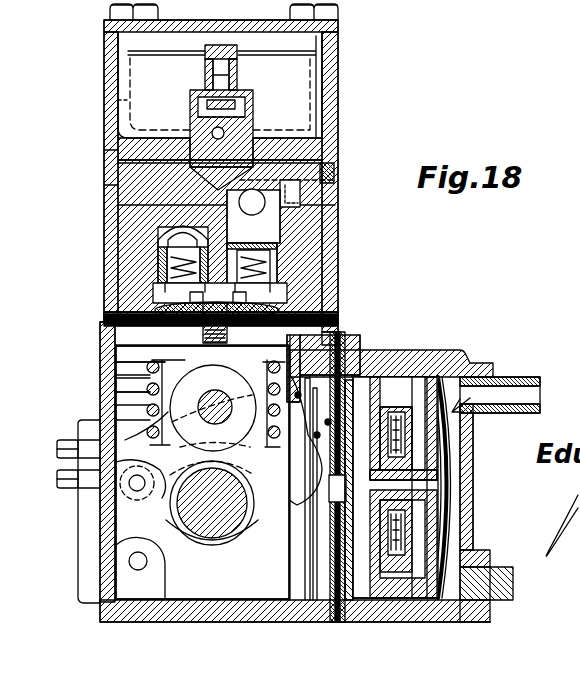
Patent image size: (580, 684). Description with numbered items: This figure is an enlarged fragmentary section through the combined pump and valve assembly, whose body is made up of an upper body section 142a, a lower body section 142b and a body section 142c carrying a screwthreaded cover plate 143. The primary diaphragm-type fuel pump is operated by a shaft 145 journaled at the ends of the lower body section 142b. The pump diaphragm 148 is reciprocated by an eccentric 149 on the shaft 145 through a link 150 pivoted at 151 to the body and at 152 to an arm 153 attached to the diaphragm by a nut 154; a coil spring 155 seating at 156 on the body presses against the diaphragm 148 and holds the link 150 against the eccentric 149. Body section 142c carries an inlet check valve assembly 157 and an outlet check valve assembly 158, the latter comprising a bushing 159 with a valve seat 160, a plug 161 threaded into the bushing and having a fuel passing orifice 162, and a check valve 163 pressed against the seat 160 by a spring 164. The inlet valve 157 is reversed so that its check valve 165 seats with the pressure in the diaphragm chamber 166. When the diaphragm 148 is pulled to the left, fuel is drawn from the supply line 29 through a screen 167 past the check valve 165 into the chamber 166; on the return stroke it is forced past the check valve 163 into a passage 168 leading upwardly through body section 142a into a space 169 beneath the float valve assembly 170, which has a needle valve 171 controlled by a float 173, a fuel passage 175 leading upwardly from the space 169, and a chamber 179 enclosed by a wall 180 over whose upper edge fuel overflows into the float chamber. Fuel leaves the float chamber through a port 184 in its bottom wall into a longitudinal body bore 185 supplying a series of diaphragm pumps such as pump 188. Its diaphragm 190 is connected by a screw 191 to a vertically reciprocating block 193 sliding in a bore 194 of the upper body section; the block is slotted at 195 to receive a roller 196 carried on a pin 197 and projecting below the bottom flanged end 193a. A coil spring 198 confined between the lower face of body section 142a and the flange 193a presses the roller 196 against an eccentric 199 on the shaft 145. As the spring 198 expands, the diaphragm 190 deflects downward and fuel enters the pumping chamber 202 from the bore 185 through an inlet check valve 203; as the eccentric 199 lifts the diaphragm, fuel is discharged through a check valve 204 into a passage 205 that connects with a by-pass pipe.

The supply line 29 is at (500, 378).
The upper body section 142a is at (323, 153).
The lower body section 142b is at (100, 500).
The body section 142c is at (420, 380).
The screwthreaded cover plate 143 is at (432, 365).
The shaft 145 is at (212, 545).
The pump diaphragm 148 is at (345, 345).
The eccentric 149 is at (222, 538).
The link 150 is at (115, 528).
The pivot 151 is at (138, 570).
The pivot 152 is at (129, 483).
The arm 153 is at (46, 461).
The nut 154 is at (358, 602).
The coil spring 155 is at (305, 602).
The spring seat 156 is at (330, 602).
The inlet check valve assembly 157 is at (440, 600).
The outlet check valve assembly 158 is at (440, 377).
The bushing 159 is at (412, 345).
The valve seat 160 is at (395, 345).
The plug 161 is at (412, 427).
The fuel passing orifice 162 is at (405, 440).
The check valve 163 is at (397, 460).
The spring 164 is at (400, 447).
The check valve 165 is at (410, 537).
The diaphragm chamber 166 is at (400, 600).
The screen 167 is at (465, 494).
The passage 168 is at (338, 172).
The space 169 is at (118, 186).
The float valve assembly 170 is at (258, 125).
The needle valve 171 is at (237, 72).
The float 173 is at (118, 78).
The fuel passage 175 is at (118, 151).
The chamber 179 is at (300, 130).
The wall 180 is at (300, 97).
The port 184 is at (338, 187).
The longitudinal body bore 185 is at (268, 208).
The diaphragm pump 188 is at (118, 342).
The diaphragm 190 is at (322, 285).
The screw 191 is at (325, 268).
The vertically reciprocating block 193 is at (104, 320).
The bottom flanged end 193a is at (168, 415).
The bore 194 is at (115, 360).
The slot 195 is at (115, 377).
The roller 196 is at (115, 392).
The pin 197 is at (150, 400).
The coil spring 198 is at (270, 420).
The eccentric 199 is at (225, 463).
The pumping chamber 202 is at (153, 290).
The inlet check valve 203 is at (300, 236).
The check valve 204 is at (167, 263).
The passage 205 is at (160, 236).